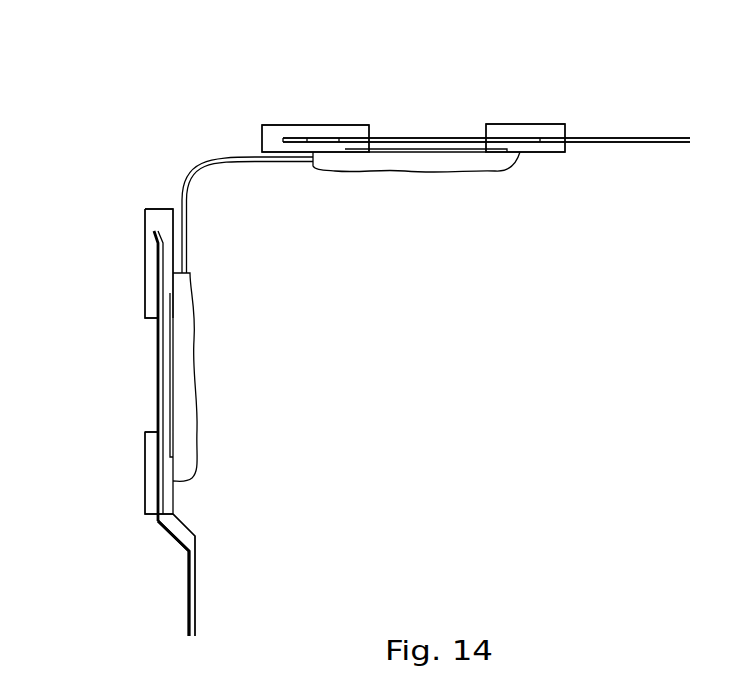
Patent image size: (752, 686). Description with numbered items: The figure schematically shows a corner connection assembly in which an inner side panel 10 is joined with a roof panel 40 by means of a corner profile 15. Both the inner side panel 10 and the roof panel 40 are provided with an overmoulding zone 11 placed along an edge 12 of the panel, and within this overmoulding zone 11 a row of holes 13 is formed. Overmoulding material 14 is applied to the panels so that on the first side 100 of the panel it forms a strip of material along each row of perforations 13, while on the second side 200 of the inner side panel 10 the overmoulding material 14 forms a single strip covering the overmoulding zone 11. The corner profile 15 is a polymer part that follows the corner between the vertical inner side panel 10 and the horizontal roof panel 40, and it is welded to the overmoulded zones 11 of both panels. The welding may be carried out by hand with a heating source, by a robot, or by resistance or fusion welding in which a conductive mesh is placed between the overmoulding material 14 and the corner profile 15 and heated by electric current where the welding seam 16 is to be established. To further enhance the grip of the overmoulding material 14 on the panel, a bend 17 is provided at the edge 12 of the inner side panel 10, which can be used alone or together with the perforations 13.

The inner side panel 10 is at (196, 558).
The overmoulding zone 11 is at (440, 106).
The edge 12 is at (154, 232).
The holes 13 is at (528, 133).
The overmoulding material 14 is at (271, 133).
The corner profile 15 is at (200, 174).
The welding seam 16 is at (424, 154).
The bend 17 is at (158, 242).
The roof panel 40 is at (600, 137).
The first side 100 is at (666, 137).
The second side 200 is at (662, 150).